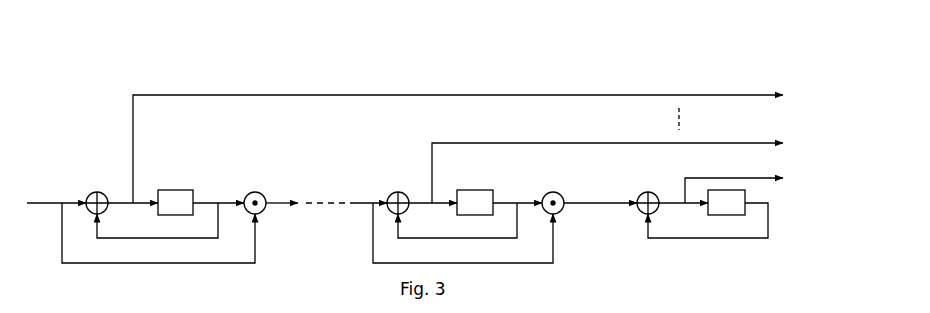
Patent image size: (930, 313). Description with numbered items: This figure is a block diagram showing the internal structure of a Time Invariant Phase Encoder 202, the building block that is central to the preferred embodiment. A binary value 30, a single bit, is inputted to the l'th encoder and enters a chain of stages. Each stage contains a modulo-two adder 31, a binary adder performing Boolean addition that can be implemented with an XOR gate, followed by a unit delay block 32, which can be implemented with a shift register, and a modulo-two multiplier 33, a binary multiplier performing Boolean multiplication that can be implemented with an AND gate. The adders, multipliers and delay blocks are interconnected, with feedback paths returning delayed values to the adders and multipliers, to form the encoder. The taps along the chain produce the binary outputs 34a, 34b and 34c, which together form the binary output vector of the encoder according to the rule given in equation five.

The Time Invariant Phase Encoder 202 is at (70, 82).
The binary value 30 is at (43, 165).
The modulo-2 adder 31 is at (98, 192).
The unit delay block 32 is at (182, 190).
The modulo-2 multiplier 33 is at (255, 192).
The binary TIPE output 34a is at (783, 155).
The binary TIPE output 34b is at (770, 112).
The binary TIPE output 34c is at (743, 65).